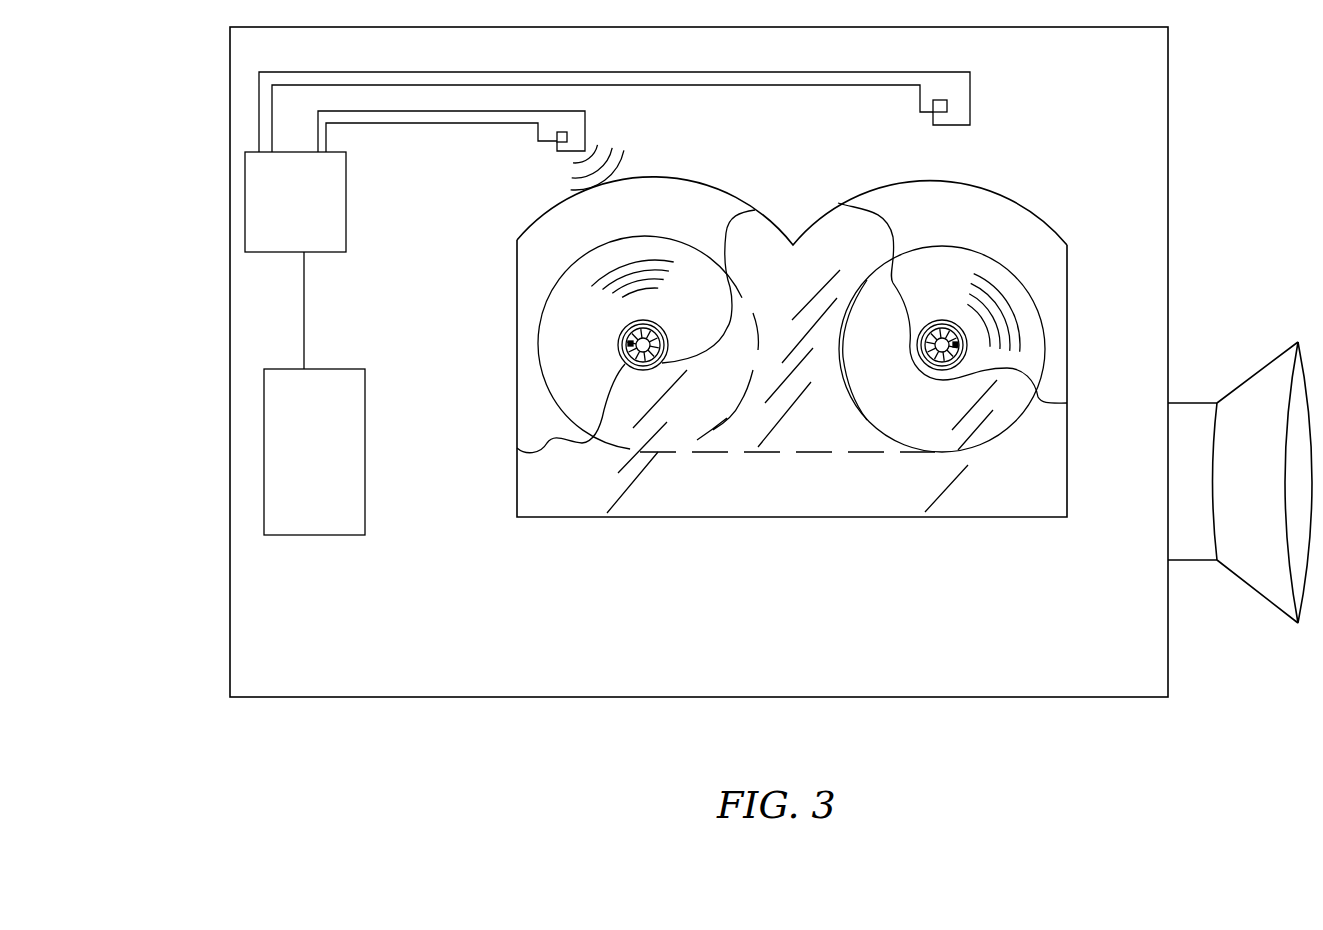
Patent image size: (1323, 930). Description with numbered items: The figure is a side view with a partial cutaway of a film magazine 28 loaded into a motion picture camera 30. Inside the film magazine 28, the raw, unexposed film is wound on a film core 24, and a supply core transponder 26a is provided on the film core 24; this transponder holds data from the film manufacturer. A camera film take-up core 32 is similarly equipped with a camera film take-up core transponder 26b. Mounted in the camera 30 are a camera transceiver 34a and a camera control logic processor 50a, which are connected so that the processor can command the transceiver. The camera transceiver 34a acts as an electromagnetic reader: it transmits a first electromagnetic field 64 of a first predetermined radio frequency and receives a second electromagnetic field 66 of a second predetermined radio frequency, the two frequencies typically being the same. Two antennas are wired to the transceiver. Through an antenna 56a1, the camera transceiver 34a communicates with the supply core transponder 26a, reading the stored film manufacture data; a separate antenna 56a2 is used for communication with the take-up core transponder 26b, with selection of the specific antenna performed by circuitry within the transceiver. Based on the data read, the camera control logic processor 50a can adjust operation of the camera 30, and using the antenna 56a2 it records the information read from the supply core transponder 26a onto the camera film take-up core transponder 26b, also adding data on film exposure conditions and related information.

The film core 24 is at (552, 395).
The supply core transponder 26a is at (620, 338).
The camera film take-up core transponder 26b is at (964, 343).
The film magazine 28 is at (762, 517).
The camera 30 is at (940, 697).
The camera film take-up core 32 is at (1017, 271).
The camera transceiver 34a is at (262, 232).
The camera control logic processor 50a is at (298, 393).
The antenna 56a1 is at (497, 123).
The antenna 56a2 is at (972, 110).
The first electromagnetic field 64 is at (617, 165).
The second electromagnetic field 66 is at (591, 287).